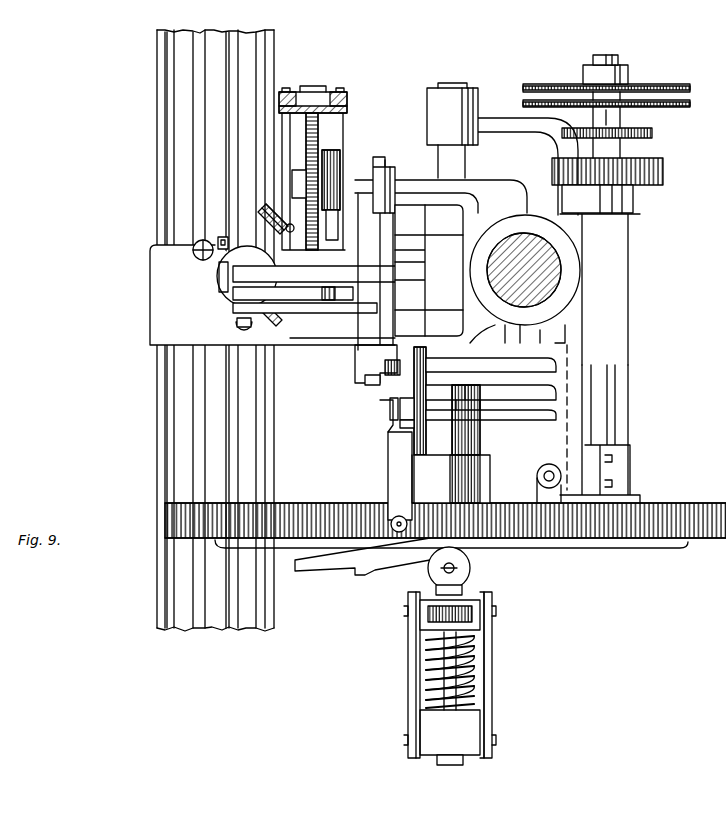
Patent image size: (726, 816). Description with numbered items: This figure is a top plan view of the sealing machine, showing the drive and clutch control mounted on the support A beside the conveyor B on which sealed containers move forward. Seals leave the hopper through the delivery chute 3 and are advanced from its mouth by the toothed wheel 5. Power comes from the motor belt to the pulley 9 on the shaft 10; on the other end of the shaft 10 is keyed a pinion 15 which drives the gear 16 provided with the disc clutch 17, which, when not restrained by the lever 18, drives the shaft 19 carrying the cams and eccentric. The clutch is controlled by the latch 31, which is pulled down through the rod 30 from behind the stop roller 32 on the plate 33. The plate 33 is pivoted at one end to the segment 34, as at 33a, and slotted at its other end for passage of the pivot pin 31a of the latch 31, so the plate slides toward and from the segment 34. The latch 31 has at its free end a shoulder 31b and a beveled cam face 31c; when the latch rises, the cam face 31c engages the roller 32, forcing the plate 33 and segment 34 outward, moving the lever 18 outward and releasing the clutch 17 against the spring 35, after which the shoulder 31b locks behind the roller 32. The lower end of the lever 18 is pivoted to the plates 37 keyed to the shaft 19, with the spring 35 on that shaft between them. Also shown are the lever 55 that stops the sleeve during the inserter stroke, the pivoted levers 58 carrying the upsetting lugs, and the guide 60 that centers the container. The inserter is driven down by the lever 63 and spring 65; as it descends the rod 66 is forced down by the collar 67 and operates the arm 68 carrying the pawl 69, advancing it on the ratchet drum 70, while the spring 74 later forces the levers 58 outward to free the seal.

The conveyor B is at (183, 432).
The support A is at (563, 266).
The delivery chute 3 is at (347, 102).
The toothed wheel 5 is at (325, 110).
The pulley 9 is at (538, 92).
The shaft 10 is at (605, 55).
The pinion 15 is at (607, 540).
The gear 16 is at (340, 503).
The disc clutch 17 is at (286, 550).
The lever 18 is at (440, 592).
The shaft 19 is at (450, 88).
The rod 30 is at (388, 425).
The latch 31 is at (405, 380).
The pivot pin 31a is at (366, 380).
The shoulder 31b is at (425, 420).
The cam face 31c is at (428, 372).
The stop roller 32 is at (392, 410).
The plate 33 is at (426, 438).
The pivot 33a is at (397, 460).
The segment 34 is at (360, 572).
The spring 35 is at (432, 665).
The plates 37 is at (412, 652).
The lever 55 is at (336, 306).
The levers 58 is at (285, 205).
The guide 60 is at (153, 283).
The lever 63 is at (237, 272).
The spring 65 is at (195, 245).
The rod 66 is at (262, 210).
The collar 67 is at (222, 236).
The arm 68 is at (348, 243).
The pawl 69 is at (388, 168).
The ratchet drum 70 is at (340, 155).
The spring 74 is at (243, 318).